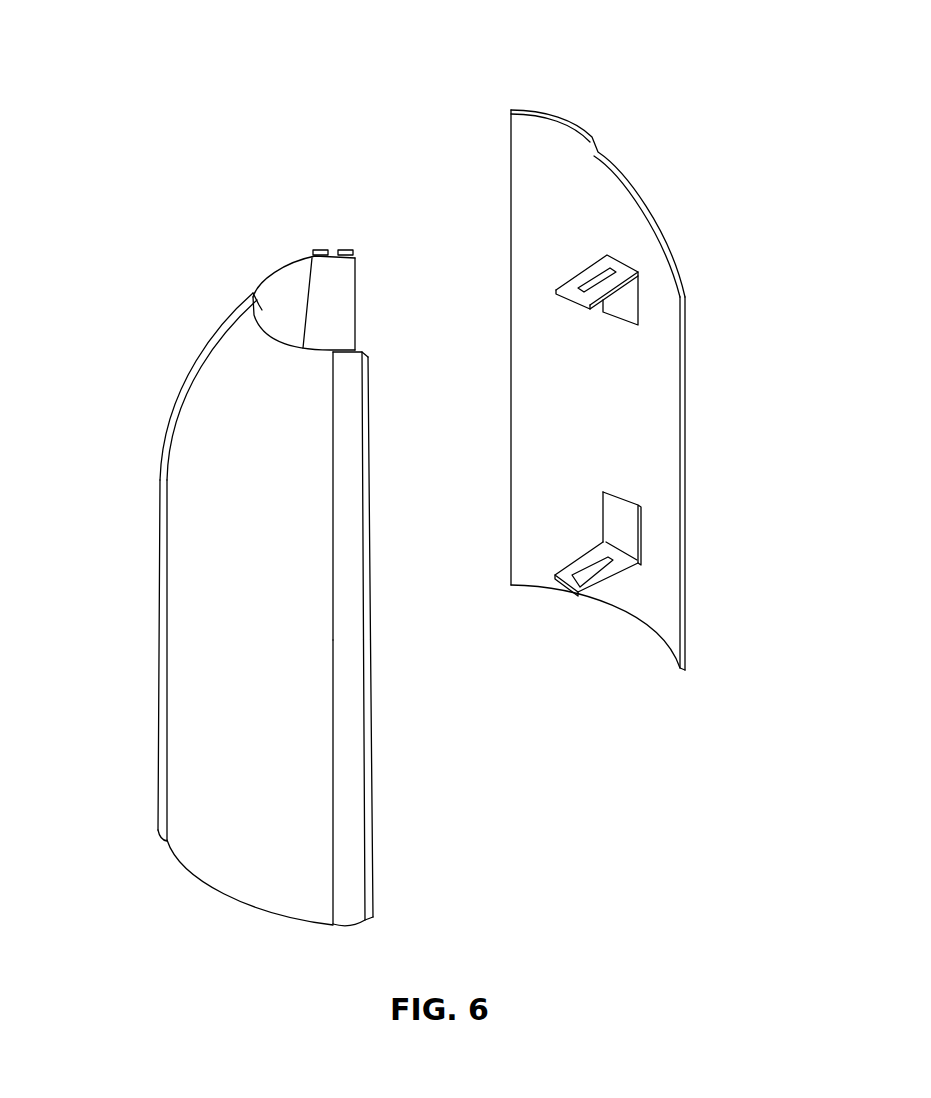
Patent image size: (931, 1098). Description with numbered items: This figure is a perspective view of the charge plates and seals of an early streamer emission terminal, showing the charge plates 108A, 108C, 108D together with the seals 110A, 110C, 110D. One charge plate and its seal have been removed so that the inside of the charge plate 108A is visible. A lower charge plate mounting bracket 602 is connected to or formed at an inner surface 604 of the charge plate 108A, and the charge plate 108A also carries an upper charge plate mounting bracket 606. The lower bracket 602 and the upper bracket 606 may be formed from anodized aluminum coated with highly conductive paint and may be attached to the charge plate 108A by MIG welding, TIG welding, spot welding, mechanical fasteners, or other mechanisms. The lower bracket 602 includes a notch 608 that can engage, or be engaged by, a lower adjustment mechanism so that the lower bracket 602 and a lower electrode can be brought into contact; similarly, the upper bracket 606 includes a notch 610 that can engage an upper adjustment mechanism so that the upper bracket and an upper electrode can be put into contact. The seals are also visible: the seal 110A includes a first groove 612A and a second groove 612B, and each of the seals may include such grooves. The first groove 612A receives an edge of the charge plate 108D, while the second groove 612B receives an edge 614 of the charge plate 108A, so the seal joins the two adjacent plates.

The charge plate 108A is at (640, 423).
The charge plate 108C is at (286, 761).
The charge plate 108D is at (283, 292).
The seal 110A is at (332, 310).
The seal 110C is at (348, 865).
The seal 110D is at (203, 364).
The lower charge plate mounting bracket 602 is at (625, 527).
The inner surface 604 is at (650, 480).
The upper charge plate mounting bracket 606 is at (627, 310).
The notch 608 is at (563, 586).
The notch 610 is at (567, 304).
The first groove 612A is at (316, 243).
The second groove 612B is at (350, 241).
The edge 614 is at (512, 147).